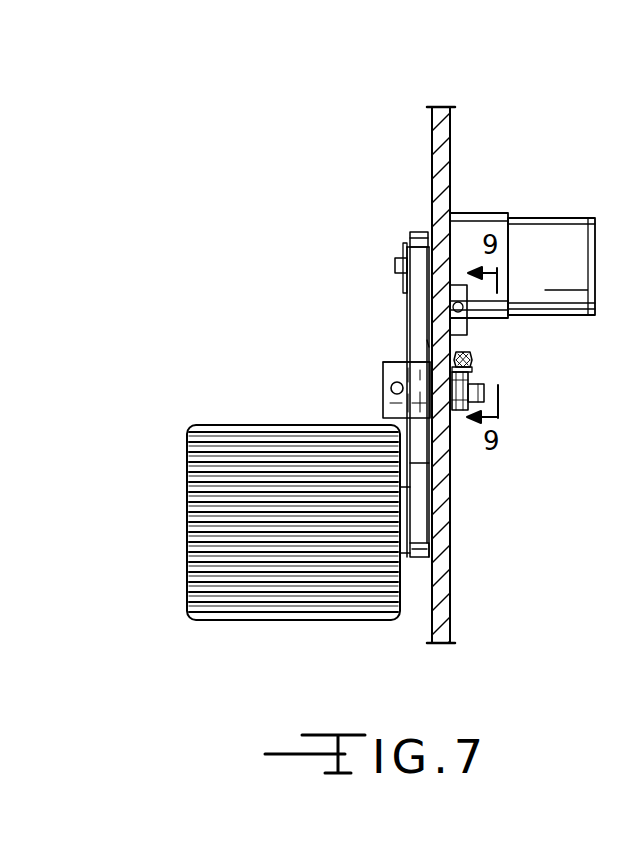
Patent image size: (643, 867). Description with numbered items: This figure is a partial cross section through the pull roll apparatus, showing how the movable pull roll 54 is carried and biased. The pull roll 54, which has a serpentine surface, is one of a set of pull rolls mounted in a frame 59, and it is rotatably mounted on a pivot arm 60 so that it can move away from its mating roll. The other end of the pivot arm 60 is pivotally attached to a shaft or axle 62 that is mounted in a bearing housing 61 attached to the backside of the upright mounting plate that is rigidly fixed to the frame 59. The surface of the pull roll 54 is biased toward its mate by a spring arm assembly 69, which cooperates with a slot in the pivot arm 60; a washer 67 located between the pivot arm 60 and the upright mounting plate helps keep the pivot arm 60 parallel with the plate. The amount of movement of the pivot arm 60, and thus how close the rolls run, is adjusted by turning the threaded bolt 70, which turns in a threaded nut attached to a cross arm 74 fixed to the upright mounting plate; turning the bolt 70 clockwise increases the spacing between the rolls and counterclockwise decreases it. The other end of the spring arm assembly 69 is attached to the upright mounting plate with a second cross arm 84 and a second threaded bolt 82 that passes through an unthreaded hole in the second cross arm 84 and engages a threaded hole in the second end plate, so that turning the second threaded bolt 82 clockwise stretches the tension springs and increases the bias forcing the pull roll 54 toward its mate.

The pull roll 54 is at (258, 622).
The frame 59 is at (452, 138).
The pivot arm 60 is at (429, 463).
The bearing housing 61 is at (538, 233).
The shaft or axle 62 is at (396, 266).
The washer 67 is at (427, 343).
The spring arm assembly 69 is at (384, 360).
The threaded bolt 70 is at (475, 355).
The cross arm 74 is at (470, 378).
The second threaded bolt 82 is at (386, 389).
The second cross arm 84 is at (383, 372).